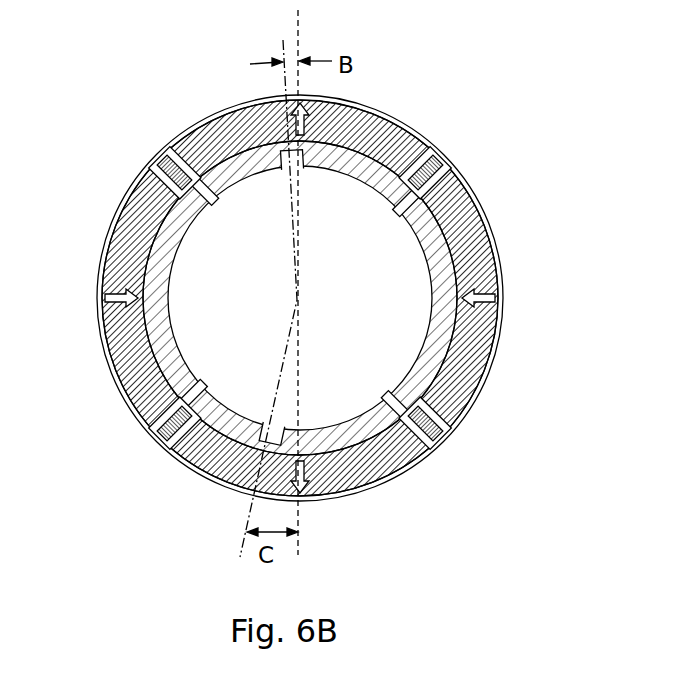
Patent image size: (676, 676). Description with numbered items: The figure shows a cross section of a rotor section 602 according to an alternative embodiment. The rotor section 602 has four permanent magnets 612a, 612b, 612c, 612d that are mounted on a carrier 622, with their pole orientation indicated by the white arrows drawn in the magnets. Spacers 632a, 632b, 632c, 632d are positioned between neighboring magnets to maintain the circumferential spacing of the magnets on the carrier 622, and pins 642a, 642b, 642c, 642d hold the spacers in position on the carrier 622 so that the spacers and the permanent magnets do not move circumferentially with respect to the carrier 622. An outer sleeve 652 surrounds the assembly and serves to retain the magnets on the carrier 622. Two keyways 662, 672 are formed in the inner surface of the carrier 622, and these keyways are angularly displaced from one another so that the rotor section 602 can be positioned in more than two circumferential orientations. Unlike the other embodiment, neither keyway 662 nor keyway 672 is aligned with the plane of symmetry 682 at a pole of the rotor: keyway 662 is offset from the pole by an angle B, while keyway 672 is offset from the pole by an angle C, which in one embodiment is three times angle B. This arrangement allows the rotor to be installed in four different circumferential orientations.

The rotor section 602 is at (143, 89).
The permanent magnet 612a is at (378, 118).
The permanent magnet 612b is at (494, 252).
The permanent magnet 612c is at (362, 482).
The permanent magnet 612d is at (120, 218).
The carrier 622 is at (170, 268).
The spacer 632a is at (428, 160).
The spacer 632b is at (436, 440).
The spacer 632c is at (150, 437).
The spacer 632d is at (170, 165).
The pin 642a is at (395, 197).
The pin 642b is at (395, 405).
The pin 642c is at (195, 392).
The pin 642d is at (192, 192).
The outer sleeve 652 is at (243, 103).
The keyway 662 is at (280, 166).
The keyway 672 is at (266, 430).
The plane of symmetry 682 is at (300, 22).